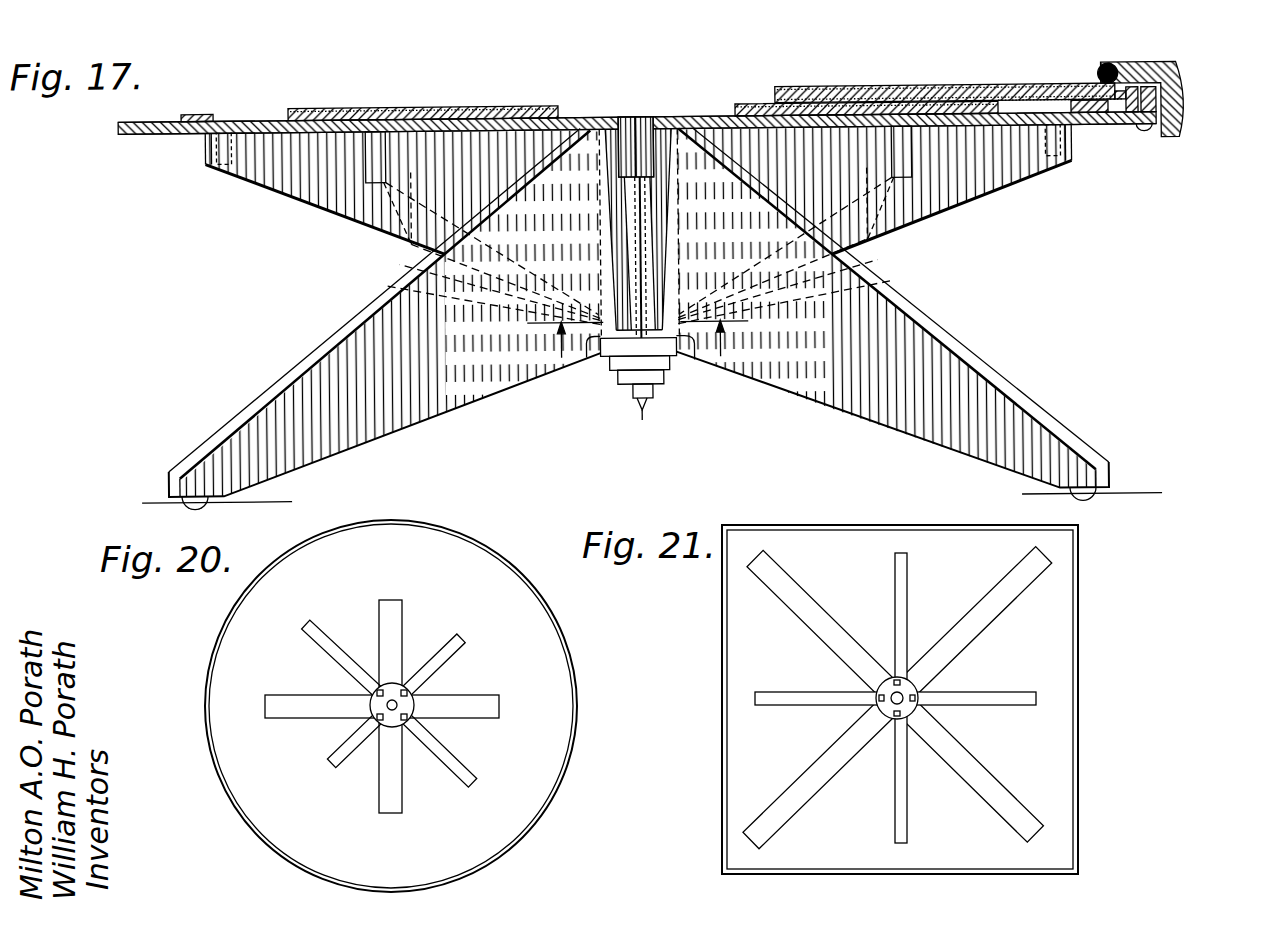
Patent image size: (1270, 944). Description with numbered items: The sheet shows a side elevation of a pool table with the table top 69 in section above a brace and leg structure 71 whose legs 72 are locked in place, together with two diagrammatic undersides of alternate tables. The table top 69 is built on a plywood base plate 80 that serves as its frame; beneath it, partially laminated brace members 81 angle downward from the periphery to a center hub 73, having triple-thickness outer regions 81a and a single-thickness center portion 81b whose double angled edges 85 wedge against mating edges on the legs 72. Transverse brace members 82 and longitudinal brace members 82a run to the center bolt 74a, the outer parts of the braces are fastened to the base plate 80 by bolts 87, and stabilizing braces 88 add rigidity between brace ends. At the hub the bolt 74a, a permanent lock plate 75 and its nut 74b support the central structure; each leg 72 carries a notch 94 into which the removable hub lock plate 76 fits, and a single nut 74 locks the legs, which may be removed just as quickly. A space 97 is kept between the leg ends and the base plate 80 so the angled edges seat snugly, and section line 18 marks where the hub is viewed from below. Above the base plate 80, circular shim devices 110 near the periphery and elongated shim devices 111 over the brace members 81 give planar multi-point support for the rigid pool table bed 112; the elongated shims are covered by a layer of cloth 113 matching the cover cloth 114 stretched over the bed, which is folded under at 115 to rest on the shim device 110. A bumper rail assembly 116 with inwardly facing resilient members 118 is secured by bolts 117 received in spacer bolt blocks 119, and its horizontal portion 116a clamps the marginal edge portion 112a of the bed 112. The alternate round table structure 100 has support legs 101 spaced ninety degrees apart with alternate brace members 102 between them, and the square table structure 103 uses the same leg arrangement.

In FIG. 17, the line 18- 18 is at (635, 347).
In FIG. 17, the table top 69 is at (1000, 74).
In FIG. 17, the brace and leg structure 71 is at (622, 284).
In FIG. 17, the legs 72 is at (430, 396).
In FIG. 17, the center hub 73 is at (595, 303).
In FIG. 17, the nut 74 is at (639, 386).
In FIG. 17, the bolt 74a is at (680, 263).
In FIG. 17, the permanent lock plate nut 74b is at (586, 362).
In FIG. 17, the permanent lock plate 75 is at (692, 331).
In FIG. 17, the hub lock plate 76 is at (664, 368).
In FIG. 17, the base plate 80 is at (1110, 133).
In FIG. 17, the brace members 81 is at (300, 188).
In FIG. 17, the outer regions 81a is at (395, 215).
In FIG. 17, the center portion 81b is at (385, 283).
In FIG. 17, the brace members 82 is at (650, 210).
In FIG. 17, the brace members 82a is at (398, 243).
In FIG. 17, the double angled edges 85 is at (537, 98).
In FIG. 17, the bolts 87 is at (216, 157).
In FIG. 17, the stabilizing braces 88 is at (420, 170).
In FIG. 17, the notch 94 is at (700, 358).
In FIG. 17, the space 97 is at (662, 126).
In FIG. 20, the round table structure 100 is at (421, 706).
In FIG. 20, the support legs 101 is at (472, 608).
In FIG. 21, the support legs 101 is at (848, 585).
In FIG. 20, the alternate brace members 102 is at (340, 649).
In FIG. 21, the alternate brace members 102 is at (895, 609).
In FIG. 21, the square table structure 103 is at (1050, 641).
In FIG. 17, the circular shim devices 110 is at (203, 108).
In FIG. 17, the elongated shim devices 111 is at (440, 104).
In FIG. 17, the pool table bed 112 is at (910, 55).
In FIG. 17, the marginal edge portion 112a is at (1130, 68).
In FIG. 17, the layer of cloth 113 is at (338, 104).
In FIG. 17, the cover cloth 114 is at (925, 88).
In FIG. 17, the folded cover cloth 115 is at (1110, 90).
In FIG. 17, the bumper rail assembly 116 is at (1192, 77).
In FIG. 17, the horizontal portion 116a is at (1116, 74).
In FIG. 17, the bolts 117 is at (1152, 135).
In FIG. 17, the resilient members 118 is at (1106, 70).
In FIG. 17, the spacer bolt blocks 119 is at (1162, 105).